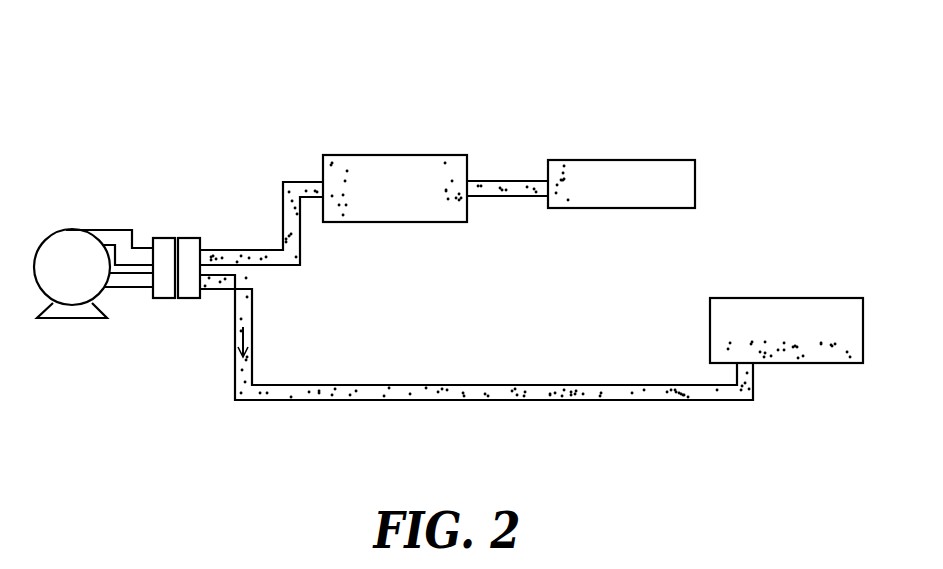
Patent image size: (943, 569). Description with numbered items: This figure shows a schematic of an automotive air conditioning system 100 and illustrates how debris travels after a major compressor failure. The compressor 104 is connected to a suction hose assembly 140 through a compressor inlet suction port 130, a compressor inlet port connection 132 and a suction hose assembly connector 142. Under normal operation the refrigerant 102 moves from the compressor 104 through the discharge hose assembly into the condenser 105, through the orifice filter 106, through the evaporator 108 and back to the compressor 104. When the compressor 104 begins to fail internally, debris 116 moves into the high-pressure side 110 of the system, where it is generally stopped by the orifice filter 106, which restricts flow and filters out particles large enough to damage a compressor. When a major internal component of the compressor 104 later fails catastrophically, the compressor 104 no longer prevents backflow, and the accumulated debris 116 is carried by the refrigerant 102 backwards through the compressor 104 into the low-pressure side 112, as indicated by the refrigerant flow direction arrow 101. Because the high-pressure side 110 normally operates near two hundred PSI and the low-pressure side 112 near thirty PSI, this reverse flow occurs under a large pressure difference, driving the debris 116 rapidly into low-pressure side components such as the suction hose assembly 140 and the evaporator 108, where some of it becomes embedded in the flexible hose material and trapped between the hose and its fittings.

The automotive air conditioning system 100 is at (703, 79).
The refrigerant flow direction arrow 101 is at (248, 340).
The refrigerant 102 is at (418, 393).
The compressor 104 is at (90, 283).
The condenser 105 is at (410, 202).
The orifice filter 106 is at (640, 197).
The evaporator 108 is at (800, 332).
The high-pressure side 110 is at (351, 88).
The low-pressure side 112 is at (278, 431).
The debris 116 is at (292, 236).
The compressor inlet suction port 130 is at (144, 298).
The compressor inlet port connection 132 is at (165, 299).
The suction hose assembly 140 is at (193, 277).
The suction hose assembly connector 142 is at (190, 299).